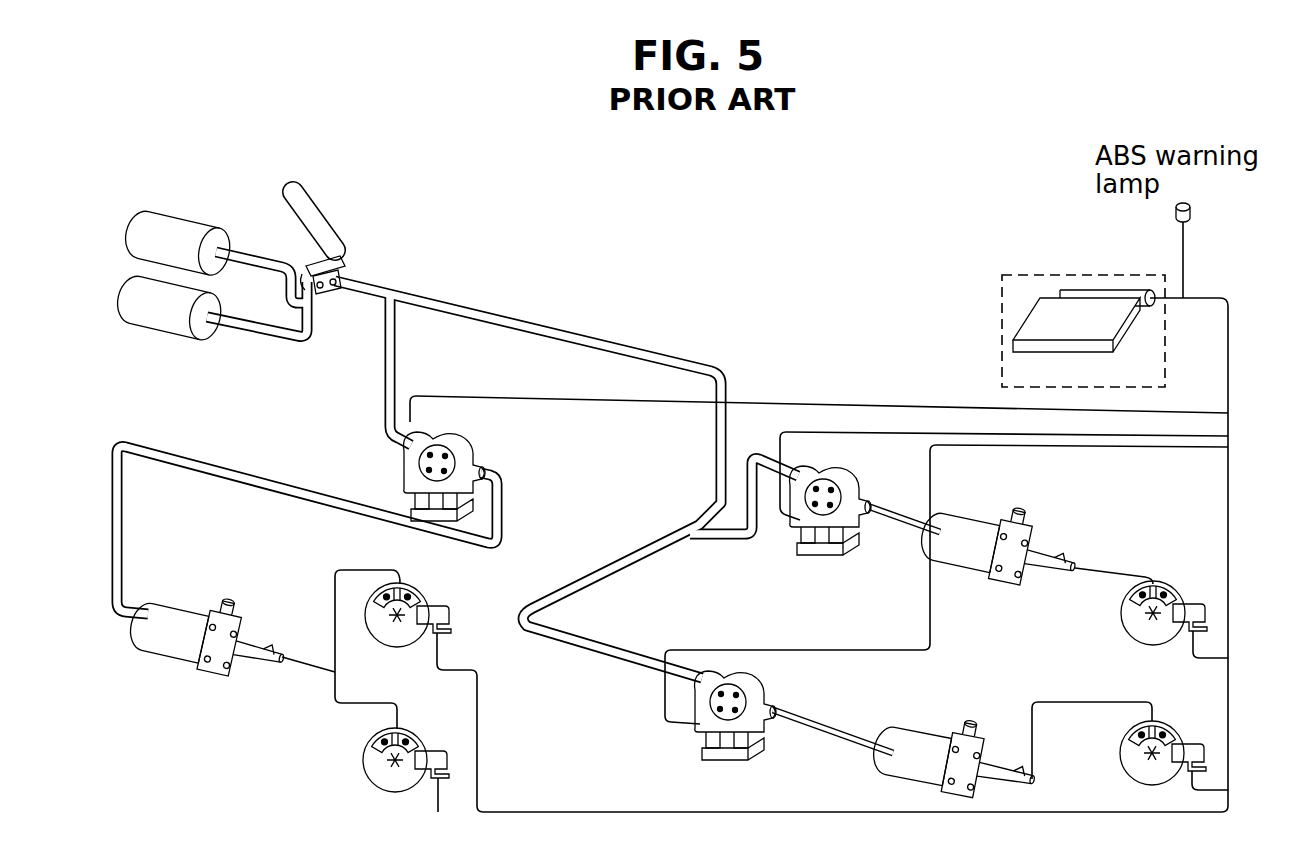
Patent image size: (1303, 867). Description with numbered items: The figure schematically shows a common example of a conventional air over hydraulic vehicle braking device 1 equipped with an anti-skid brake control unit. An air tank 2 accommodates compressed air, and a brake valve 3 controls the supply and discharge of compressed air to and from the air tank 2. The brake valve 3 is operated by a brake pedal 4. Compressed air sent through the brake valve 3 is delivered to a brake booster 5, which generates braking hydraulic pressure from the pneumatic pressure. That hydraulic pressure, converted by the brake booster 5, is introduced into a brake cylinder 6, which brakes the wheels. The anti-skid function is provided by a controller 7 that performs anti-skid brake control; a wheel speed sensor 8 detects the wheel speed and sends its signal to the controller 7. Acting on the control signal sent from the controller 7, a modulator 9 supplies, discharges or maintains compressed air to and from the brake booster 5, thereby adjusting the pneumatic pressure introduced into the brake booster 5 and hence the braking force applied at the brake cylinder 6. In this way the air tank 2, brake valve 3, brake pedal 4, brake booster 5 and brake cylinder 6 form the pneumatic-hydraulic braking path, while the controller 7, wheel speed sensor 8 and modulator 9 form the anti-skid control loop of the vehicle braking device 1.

The vehicle braking device 1 is at (727, 348).
The air tank 2 is at (128, 290).
The brake valve 3 is at (342, 268).
The brake pedal 4 is at (322, 233).
The brake booster 5 is at (168, 618).
The brake cylinder 6 is at (403, 592).
The controller 7 is at (1038, 318).
The wheel speed sensor 8 is at (445, 612).
The modulator 9 is at (470, 452).